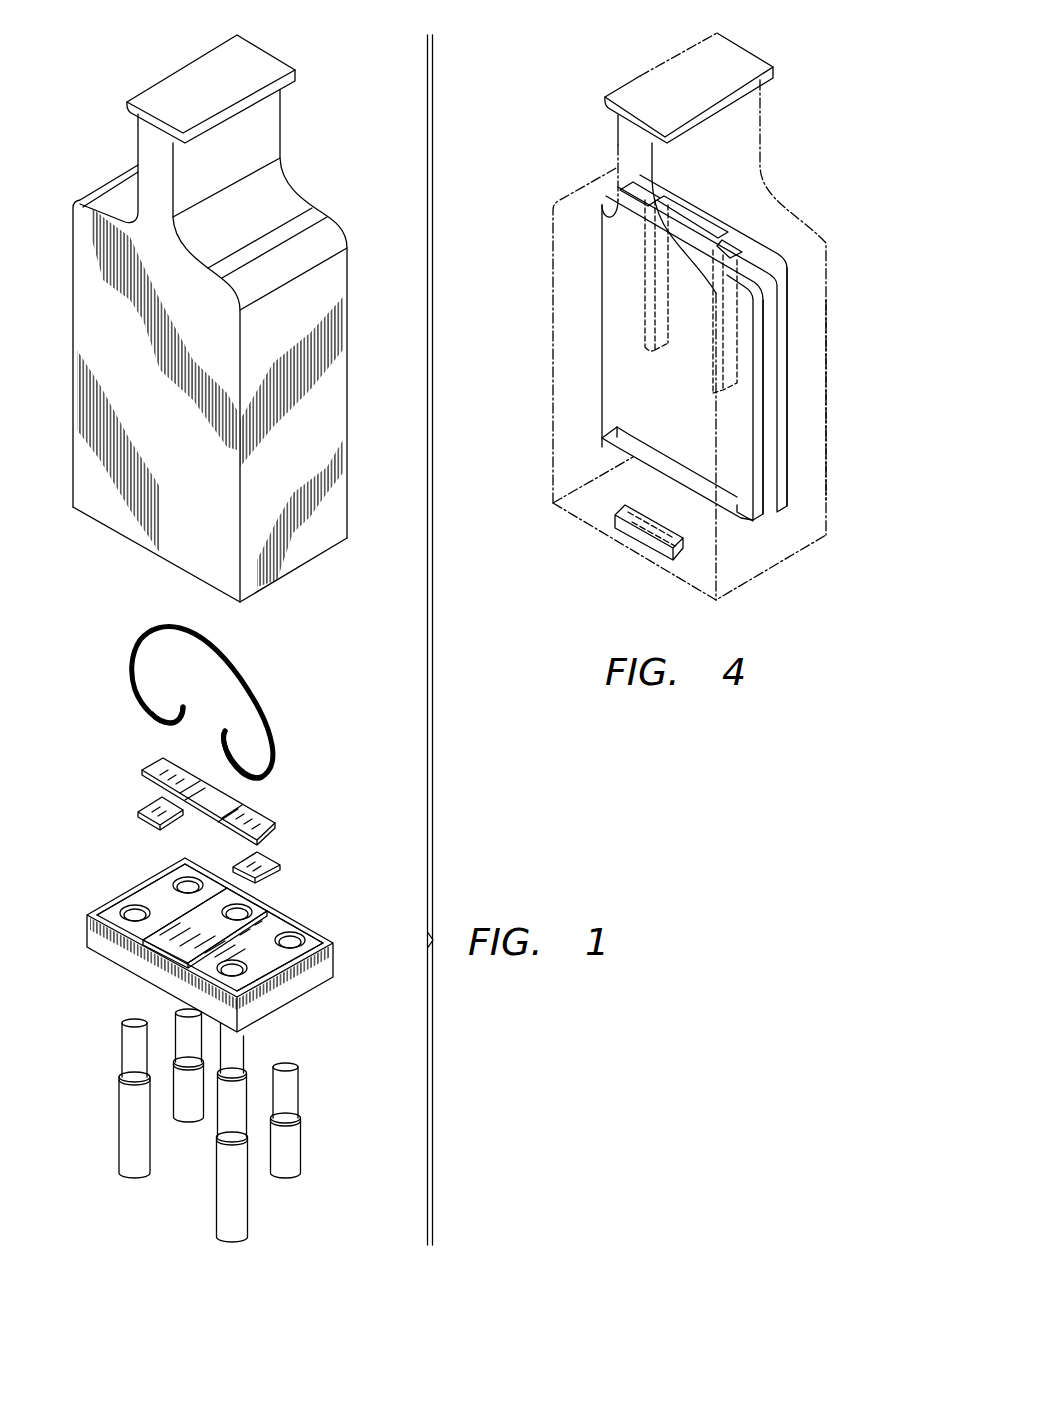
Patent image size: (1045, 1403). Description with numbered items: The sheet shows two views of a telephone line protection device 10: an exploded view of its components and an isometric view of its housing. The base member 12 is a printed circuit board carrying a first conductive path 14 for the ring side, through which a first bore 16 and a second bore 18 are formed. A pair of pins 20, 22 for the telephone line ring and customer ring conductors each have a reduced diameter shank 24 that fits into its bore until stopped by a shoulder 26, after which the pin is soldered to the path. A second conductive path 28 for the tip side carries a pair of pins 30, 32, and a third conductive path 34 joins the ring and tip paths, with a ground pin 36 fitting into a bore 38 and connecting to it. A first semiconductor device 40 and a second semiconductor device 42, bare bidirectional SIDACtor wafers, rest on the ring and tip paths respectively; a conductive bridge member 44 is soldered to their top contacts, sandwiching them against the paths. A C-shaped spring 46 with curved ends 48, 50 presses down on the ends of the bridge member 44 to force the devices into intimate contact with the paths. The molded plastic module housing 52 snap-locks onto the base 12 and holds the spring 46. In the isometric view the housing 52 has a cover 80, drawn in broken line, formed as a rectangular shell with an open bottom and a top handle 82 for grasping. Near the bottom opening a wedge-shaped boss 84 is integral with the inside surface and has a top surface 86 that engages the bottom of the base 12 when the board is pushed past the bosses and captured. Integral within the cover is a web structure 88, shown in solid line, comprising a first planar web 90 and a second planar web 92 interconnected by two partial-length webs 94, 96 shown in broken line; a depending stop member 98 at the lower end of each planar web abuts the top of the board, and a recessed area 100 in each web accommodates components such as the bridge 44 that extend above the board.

In FIG. 1, the telephone line protection device 10 is at (372, 133).
In FIG. 1, the base member 12 is at (335, 957).
In FIG. 1, the first conductive path 14 is at (308, 940).
In FIG. 1, the first bore 16 is at (300, 943).
In FIG. 1, the second bore 18 is at (247, 965).
In FIG. 1, the pin 20 is at (300, 1143).
In FIG. 1, the pin 22 is at (250, 1207).
In FIG. 1, the reduced diameter shank 24 is at (220, 1115).
In FIG. 1, the shoulder 26 is at (300, 1107).
In FIG. 1, the second conductive path 28 is at (148, 888).
In FIG. 1, the pin 30 is at (118, 1115).
In FIG. 1, the pin 32 is at (188, 1120).
In FIG. 1, the third conductive path 34 is at (152, 968).
In FIG. 1, the ground pin 36 is at (247, 1053).
In FIG. 1, the bore 38 is at (242, 910).
In FIG. 1, the first semiconductor device 40 is at (263, 858).
In FIG. 1, the second semiconductor device 42 is at (148, 802).
In FIG. 1, the conductive bridge member 44 is at (277, 810).
In FIG. 1, the C-shaped spring 46 is at (277, 702).
In FIG. 1, the curved end 48 is at (170, 722).
In FIG. 1, the curved end 50 is at (253, 770).
In FIG. 1, the module housing 52 is at (348, 273).
In FIG. 4, the module housing 52 is at (558, 143).
In FIG. 4, the cover 80 is at (825, 463).
In FIG. 4, the top handle 82 is at (743, 44).
In FIG. 4, the wedge-shaped boss 84 is at (680, 548).
In FIG. 4, the top surface 86 is at (663, 530).
In FIG. 4, the web structure 88 is at (798, 247).
In FIG. 4, the first planar web 90 is at (787, 328).
In FIG. 4, the second planar web 92 is at (763, 390).
In FIG. 4, the partial-length web 94 is at (645, 350).
In FIG. 4, the partial-length web 96 is at (713, 370).
In FIG. 4, the stop member 98 is at (738, 512).
In FIG. 4, the recessed area 100 is at (667, 458).